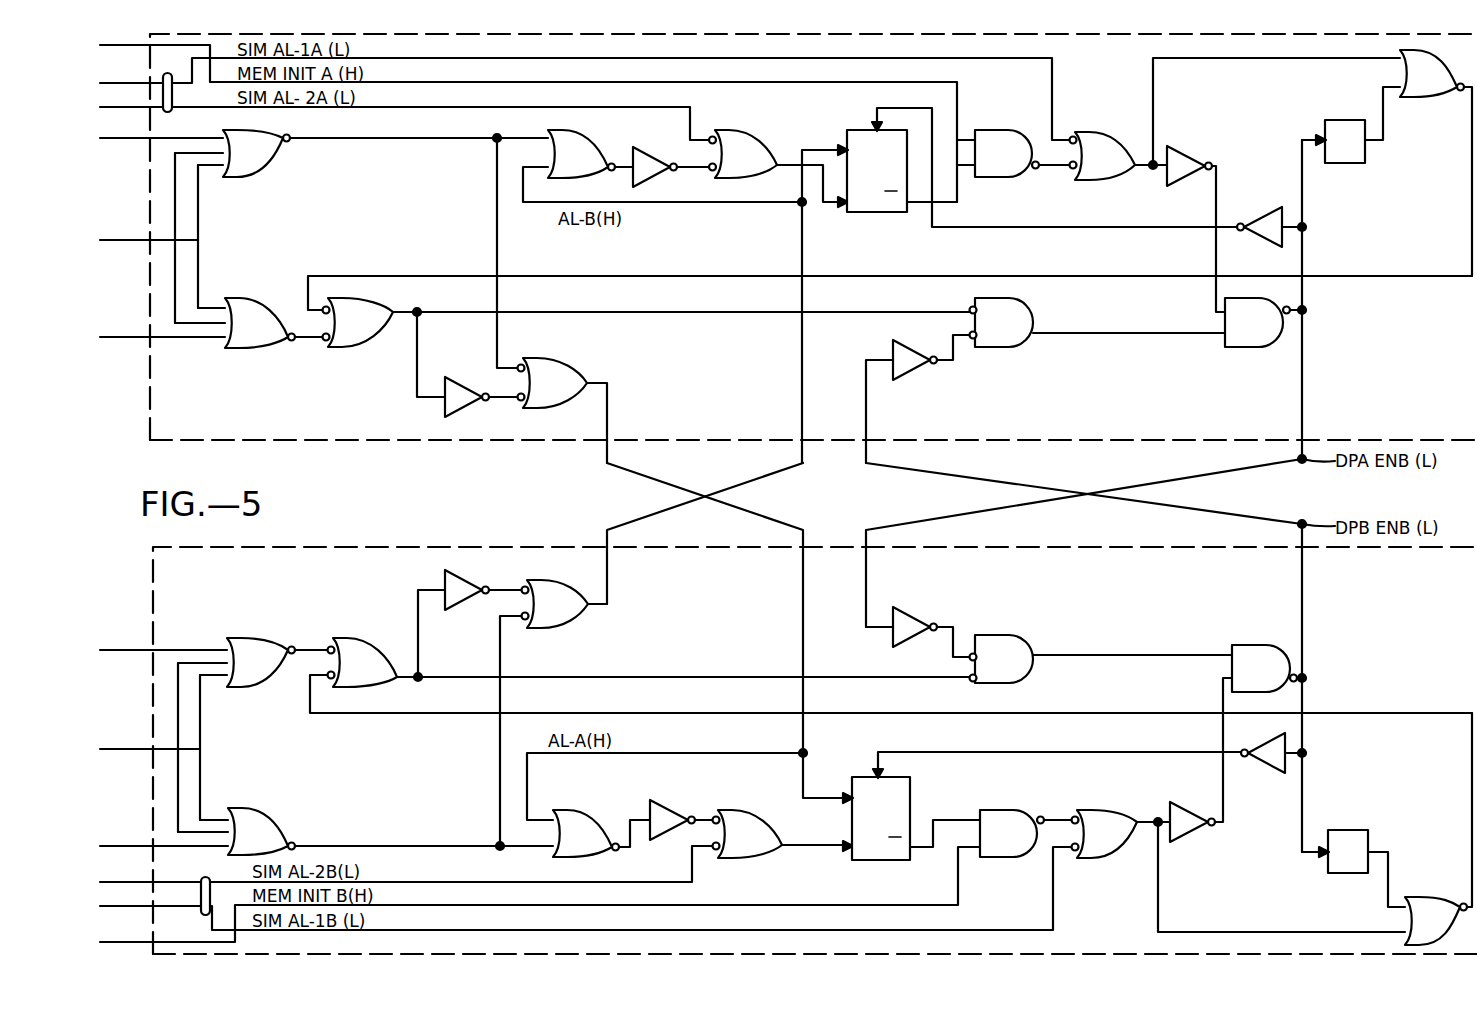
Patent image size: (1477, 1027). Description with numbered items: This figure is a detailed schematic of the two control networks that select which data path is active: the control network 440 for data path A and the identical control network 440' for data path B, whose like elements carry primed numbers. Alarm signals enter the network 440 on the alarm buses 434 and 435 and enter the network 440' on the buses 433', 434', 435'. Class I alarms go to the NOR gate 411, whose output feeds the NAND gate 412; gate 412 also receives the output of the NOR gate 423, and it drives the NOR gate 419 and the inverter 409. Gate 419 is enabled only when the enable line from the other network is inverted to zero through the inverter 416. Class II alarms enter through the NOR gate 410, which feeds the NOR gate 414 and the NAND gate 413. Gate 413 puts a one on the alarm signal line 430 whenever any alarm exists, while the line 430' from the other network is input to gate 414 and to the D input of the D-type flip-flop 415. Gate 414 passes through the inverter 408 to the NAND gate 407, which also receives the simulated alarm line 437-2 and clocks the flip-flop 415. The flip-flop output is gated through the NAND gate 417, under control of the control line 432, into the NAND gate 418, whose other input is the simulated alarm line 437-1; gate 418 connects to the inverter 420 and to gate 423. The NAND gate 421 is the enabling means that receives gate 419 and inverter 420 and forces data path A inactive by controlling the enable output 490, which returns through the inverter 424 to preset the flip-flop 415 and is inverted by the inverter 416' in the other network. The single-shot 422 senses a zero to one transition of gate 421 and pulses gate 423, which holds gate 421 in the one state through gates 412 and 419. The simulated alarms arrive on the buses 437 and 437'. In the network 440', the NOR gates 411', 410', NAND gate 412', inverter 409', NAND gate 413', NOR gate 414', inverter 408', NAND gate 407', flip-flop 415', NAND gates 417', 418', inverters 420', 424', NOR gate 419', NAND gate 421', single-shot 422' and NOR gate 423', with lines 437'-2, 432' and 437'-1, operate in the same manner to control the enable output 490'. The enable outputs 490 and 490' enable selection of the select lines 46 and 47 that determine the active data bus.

The control network 440 is at (813, 253).
The control network 440' is at (815, 735).
The simulated alarm line 437-1 is at (550, 58).
The control line 432 is at (585, 99).
The simulated alarm line 437-2 is at (560, 107).
The simulated alarm bus 437 is at (198, 102).
The alarm bus 434 is at (161, 163).
The alarm line 435 is at (162, 238).
The NOR gate 410 is at (385, 249).
The NOR gate 411 is at (211, 309).
The NAND gate 412 is at (890, 327).
The inverter 409 is at (445, 370).
The NAND gate 413 is at (563, 398).
The alarm signal line 430 is at (695, 608).
The alarm signal line 430' is at (722, 533).
The NOR gate 414 is at (662, 158).
The inverter 408 is at (671, 158).
The NAND gate 407 is at (778, 156).
The D-type flip-flop 415 is at (1018, 285).
The NAND gate 417 is at (1023, 141).
The NAND gate 418 is at (1235, 119).
The inverter 420 is at (1204, 218).
The inverter 424 is at (1270, 301).
The single-shot 422 is at (1341, 125).
The NOR gate 423 is at (1400, 163).
The NOR gate 419 is at (1098, 320).
The NAND gate 421 is at (1244, 342).
The inverter 416 is at (917, 399).
The select line 47 is at (866, 378).
The select line 46 is at (866, 588).
The enable output 490 is at (1313, 478).
The enable output 490' is at (1313, 508).
The alarm line 433' is at (163, 633).
The alarm line 435' is at (164, 747).
The alarm bus 434' is at (164, 831).
The NOR gate 411' is at (277, 647).
The NAND gate 412' is at (891, 661).
The inverter 409' is at (469, 623).
The NAND gate 413' is at (559, 715).
The NOR gate 410' is at (390, 818).
The NOR gate 414' is at (667, 803).
The inverter 408' is at (681, 806).
The NAND gate 407' is at (783, 816).
The simulated alarm line 437'-2 is at (406, 864).
The control line 432' is at (540, 894).
The simulated alarm line 437'-1 is at (585, 891).
The simulated alarm bus 437' is at (187, 886).
The D-type flip-flop 415' is at (1022, 806).
The NAND gate 417' is at (1025, 818).
The NAND gate 418' is at (1121, 817).
The inverter 420' is at (1195, 760).
The inverter 424' is at (1272, 686).
The NAND gate 421' is at (1257, 650).
The NOR gate 419' is at (1101, 648).
The inverter 416' is at (917, 623).
The single-shot 422' is at (1353, 853).
The NOR gate 423' is at (1315, 829).